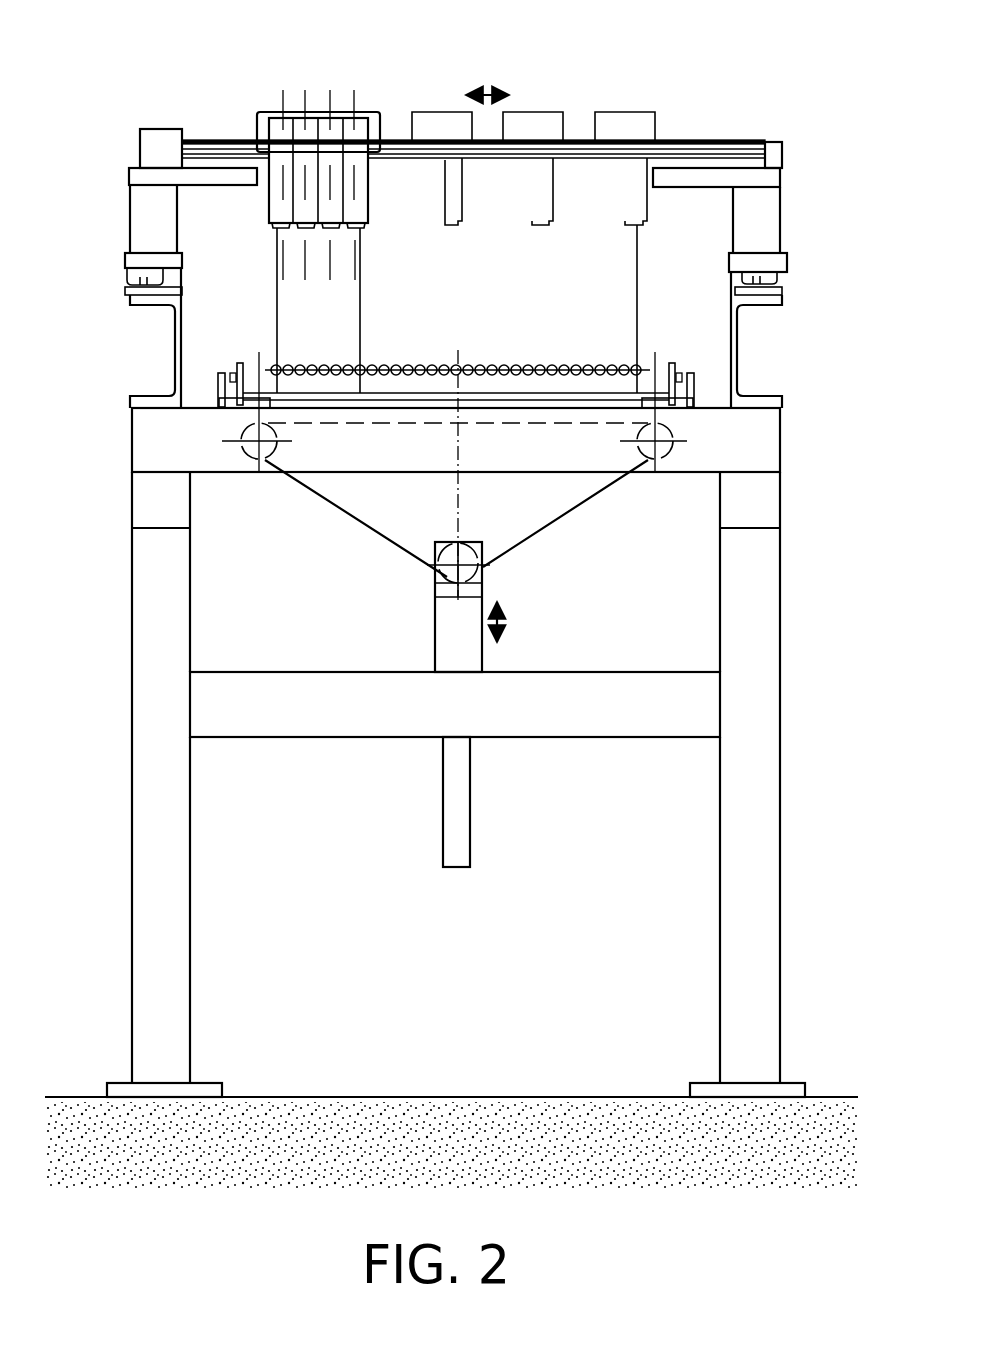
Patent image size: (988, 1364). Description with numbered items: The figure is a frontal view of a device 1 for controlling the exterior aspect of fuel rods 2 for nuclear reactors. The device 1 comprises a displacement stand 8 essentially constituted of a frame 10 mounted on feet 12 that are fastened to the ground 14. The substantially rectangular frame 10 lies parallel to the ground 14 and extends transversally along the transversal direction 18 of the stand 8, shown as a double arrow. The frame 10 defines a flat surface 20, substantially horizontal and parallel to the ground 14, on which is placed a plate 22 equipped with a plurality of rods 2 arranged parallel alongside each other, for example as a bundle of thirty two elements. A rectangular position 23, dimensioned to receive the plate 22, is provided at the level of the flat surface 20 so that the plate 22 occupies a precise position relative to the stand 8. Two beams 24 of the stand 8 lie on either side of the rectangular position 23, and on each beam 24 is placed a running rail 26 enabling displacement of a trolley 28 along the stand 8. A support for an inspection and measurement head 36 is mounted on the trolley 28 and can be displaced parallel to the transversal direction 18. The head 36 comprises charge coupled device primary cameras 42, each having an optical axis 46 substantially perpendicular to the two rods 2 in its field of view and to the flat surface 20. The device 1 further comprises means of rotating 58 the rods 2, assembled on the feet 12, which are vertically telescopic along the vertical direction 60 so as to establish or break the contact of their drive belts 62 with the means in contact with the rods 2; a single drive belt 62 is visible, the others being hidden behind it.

The device 1 is at (697, 110).
The fuel rods 2 is at (496, 360).
The displacement stand 8 is at (787, 549).
The frame 10 is at (143, 448).
The feet 12 is at (132, 728).
The ground 14 is at (565, 1108).
The transversal direction 18 is at (493, 92).
The flat surface 20 is at (187, 407).
The plate 22 is at (677, 366).
The rectangular position 23 is at (228, 408).
The beams 24 is at (172, 342).
The running rail 26 is at (130, 292).
The trolley 28 is at (748, 140).
The inspection and measurement head 36 is at (297, 88).
The primary cameras 42 is at (330, 197).
The optical axis 46 is at (355, 273).
The means of rotating 58 is at (482, 809).
The vertical direction 60 is at (505, 620).
The drive belts 62 is at (483, 424).